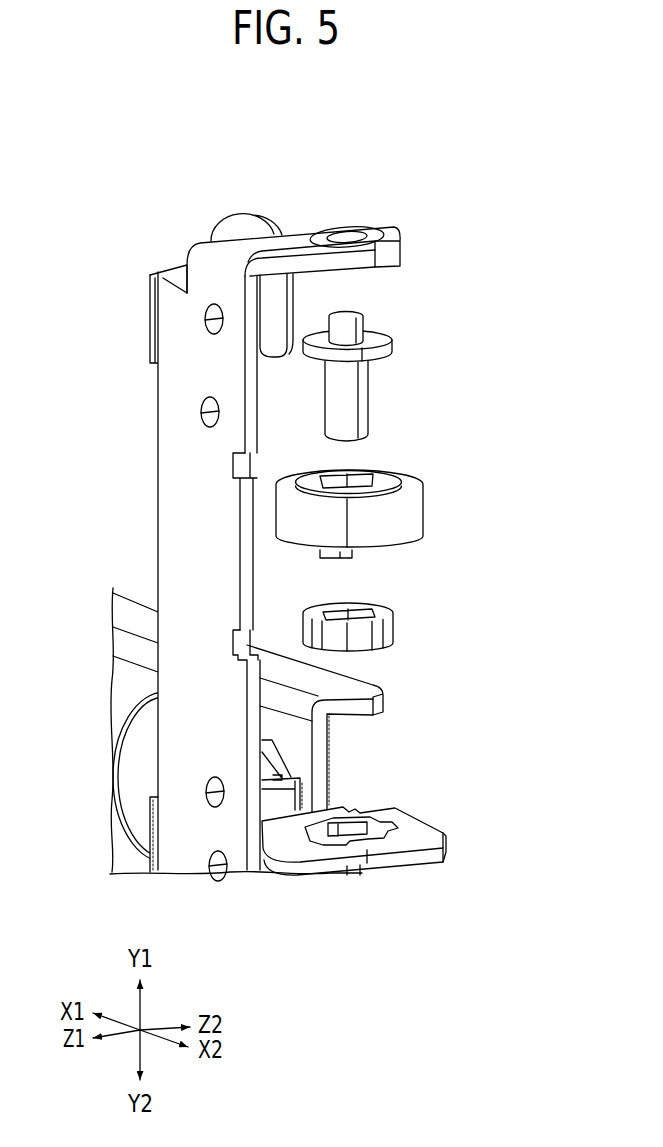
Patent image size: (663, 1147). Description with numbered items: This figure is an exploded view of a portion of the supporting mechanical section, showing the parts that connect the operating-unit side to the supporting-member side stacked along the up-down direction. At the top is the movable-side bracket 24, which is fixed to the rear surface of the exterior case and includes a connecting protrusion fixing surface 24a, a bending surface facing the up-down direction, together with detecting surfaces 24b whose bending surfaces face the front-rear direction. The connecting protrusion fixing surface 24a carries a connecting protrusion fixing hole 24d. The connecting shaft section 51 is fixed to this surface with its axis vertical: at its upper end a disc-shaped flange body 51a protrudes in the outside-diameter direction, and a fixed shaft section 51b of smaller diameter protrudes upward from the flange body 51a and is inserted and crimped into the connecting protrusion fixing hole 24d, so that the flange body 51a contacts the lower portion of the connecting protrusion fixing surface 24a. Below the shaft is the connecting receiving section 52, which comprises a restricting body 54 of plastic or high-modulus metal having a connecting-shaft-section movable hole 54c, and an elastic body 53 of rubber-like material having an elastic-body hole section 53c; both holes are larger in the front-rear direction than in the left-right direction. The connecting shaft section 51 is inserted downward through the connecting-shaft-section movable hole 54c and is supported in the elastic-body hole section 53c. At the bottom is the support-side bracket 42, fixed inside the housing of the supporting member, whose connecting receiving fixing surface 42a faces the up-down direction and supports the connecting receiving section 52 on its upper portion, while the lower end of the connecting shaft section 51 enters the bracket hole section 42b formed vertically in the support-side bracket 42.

The movable-side bracket 24 is at (265, 513).
The connecting protrusion fixing surface 24a is at (293, 250).
The detecting surface 24b is at (231, 221).
The connecting protrusion fixing hole 24d is at (343, 232).
The connecting shaft section 51 is at (388, 357).
The flange body 51a is at (377, 334).
The fixed shaft section 51b is at (360, 314).
The connecting receiving section 52 is at (404, 529).
The elastic body 53 is at (392, 596).
The elastic-body hole section 53c is at (362, 613).
The restricting body 54 is at (379, 495).
The connecting-shaft-section movable hole 54c is at (360, 474).
The support-side bracket 42 is at (366, 787).
The connecting receiving fixing surface 42a is at (413, 826).
The bracket hole section 42b is at (358, 824).